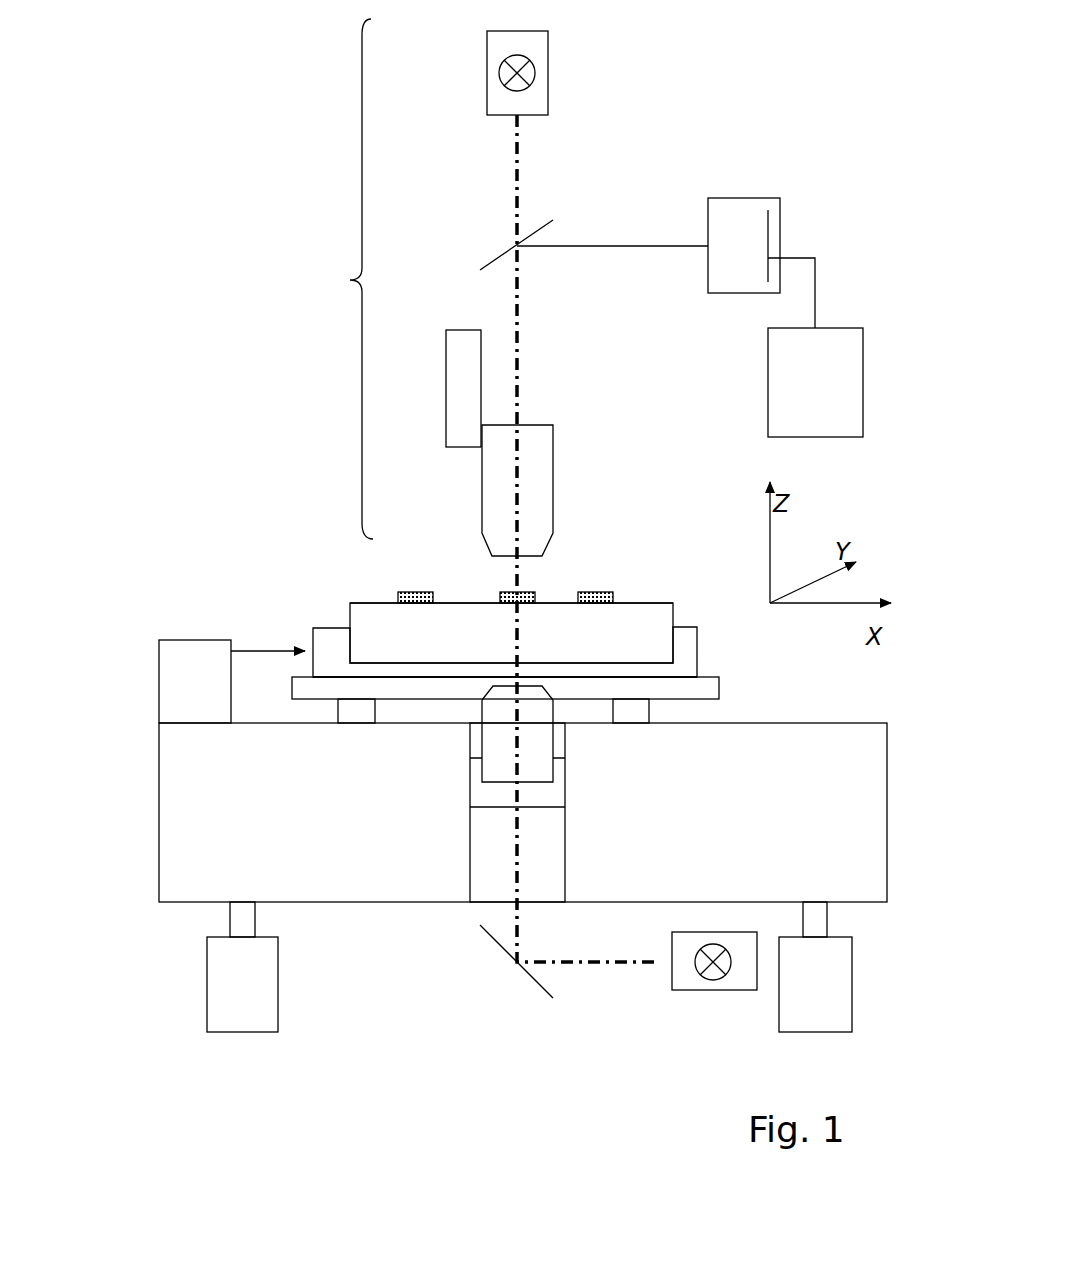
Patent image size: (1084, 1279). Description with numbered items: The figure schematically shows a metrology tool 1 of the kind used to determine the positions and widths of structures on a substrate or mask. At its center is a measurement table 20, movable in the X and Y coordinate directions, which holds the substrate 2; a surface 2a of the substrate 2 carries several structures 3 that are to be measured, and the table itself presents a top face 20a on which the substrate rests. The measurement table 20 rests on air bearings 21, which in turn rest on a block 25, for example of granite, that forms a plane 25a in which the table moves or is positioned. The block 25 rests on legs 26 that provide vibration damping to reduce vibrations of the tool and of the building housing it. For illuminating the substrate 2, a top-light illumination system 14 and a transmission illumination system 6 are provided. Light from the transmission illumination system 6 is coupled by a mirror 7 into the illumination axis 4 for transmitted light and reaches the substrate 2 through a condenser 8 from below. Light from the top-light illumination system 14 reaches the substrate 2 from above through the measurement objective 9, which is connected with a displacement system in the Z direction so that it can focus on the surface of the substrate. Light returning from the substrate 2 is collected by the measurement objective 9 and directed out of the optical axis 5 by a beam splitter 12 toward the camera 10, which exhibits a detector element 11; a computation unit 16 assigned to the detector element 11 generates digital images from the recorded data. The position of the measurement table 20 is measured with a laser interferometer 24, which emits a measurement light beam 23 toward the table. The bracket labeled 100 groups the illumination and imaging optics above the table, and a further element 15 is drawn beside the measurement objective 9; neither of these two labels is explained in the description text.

The optical system 100 is at (362, 66).
The metrology tool 1 is at (318, 500).
The top-light illumination system 14 is at (487, 62).
The beam splitter 12 is at (503, 253).
The detector element 11 is at (768, 235).
The camera 10 is at (733, 293).
The computation unit 16 is at (780, 388).
The autofocus unit 15 is at (458, 377).
The optical axis 5 is at (517, 388).
The measurement objective 9 is at (495, 483).
The substrate 2 is at (373, 615).
The wafer surface 2a is at (470, 603).
The structures 3 is at (528, 590).
The measurement table 20 is at (303, 688).
The chuck table surface 20a is at (685, 662).
The measurement light beam 23 is at (247, 650).
The laser interferometer 24 is at (184, 677).
The block 25 is at (183, 830).
The plane 25a is at (743, 722).
The air bearings 21 is at (362, 712).
The condenser 8 is at (493, 748).
The illumination axis 4 is at (517, 748).
The mirror 7 is at (543, 985).
The transmission illumination system 6 is at (697, 990).
The legs 26 is at (220, 998).